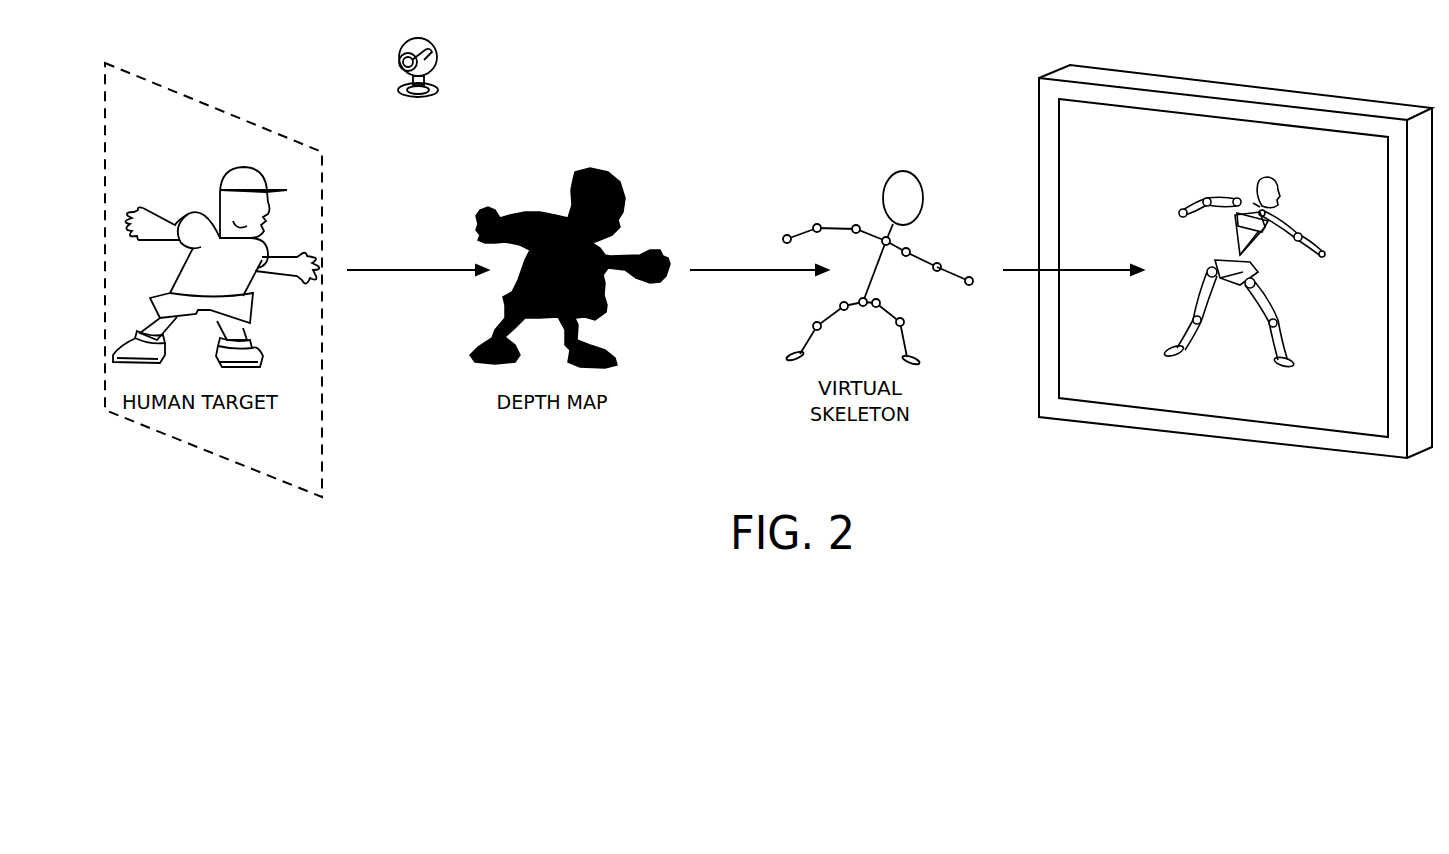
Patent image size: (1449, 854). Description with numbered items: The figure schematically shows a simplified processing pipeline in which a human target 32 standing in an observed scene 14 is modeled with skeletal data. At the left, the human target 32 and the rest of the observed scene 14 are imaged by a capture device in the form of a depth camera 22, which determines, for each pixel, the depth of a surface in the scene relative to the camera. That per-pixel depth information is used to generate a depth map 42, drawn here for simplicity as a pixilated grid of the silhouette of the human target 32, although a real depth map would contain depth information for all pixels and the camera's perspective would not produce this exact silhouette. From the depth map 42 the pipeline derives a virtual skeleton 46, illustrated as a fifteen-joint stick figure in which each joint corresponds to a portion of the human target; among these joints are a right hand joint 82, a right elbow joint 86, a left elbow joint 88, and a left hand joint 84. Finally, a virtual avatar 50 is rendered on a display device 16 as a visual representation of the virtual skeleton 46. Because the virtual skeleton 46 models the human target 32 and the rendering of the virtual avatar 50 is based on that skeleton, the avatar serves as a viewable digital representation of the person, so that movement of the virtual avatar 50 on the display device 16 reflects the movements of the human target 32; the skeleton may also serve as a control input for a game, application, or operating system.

The observed scene 14 is at (140, 133).
The human target 32 is at (198, 277).
The depth camera 22 is at (437, 48).
The depth map 42 is at (580, 172).
The virtual skeleton 46 is at (893, 208).
The right hand joint 82 is at (784, 234).
The right elbow joint 86 is at (816, 223).
The left elbow joint 88 is at (939, 263).
The left hand joint 84 is at (972, 272).
The virtual avatar 50 is at (1258, 178).
The display device 16 is at (1338, 327).